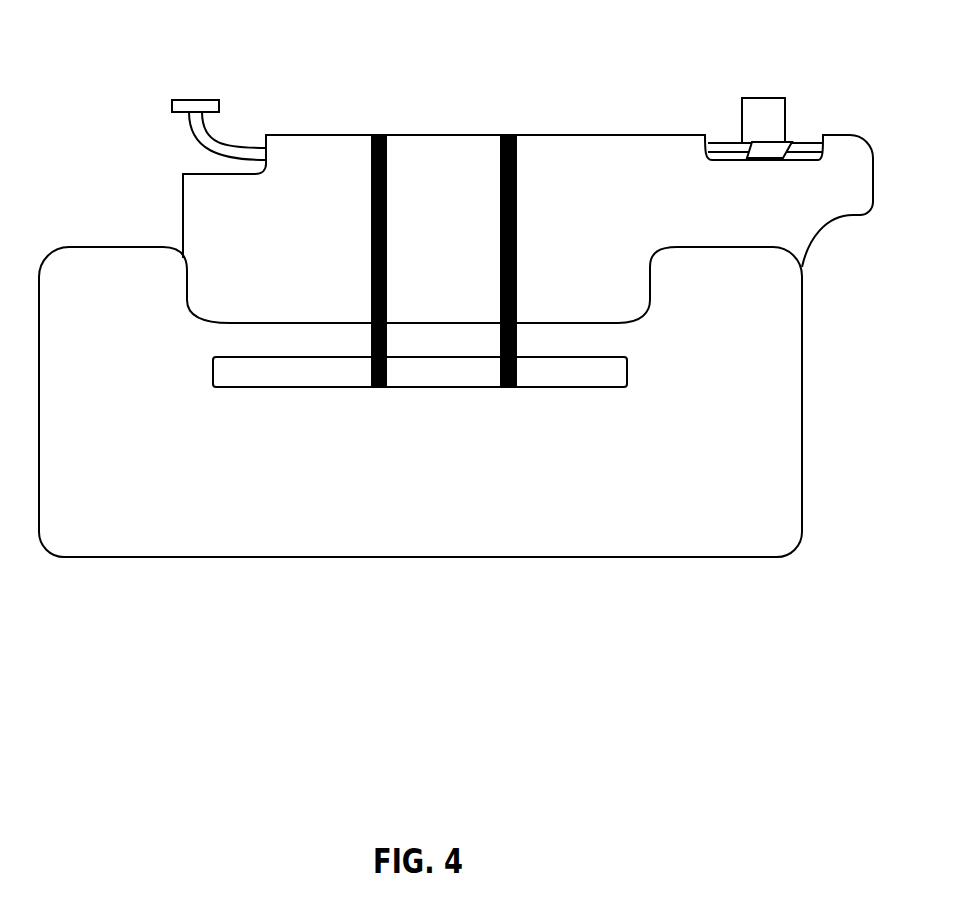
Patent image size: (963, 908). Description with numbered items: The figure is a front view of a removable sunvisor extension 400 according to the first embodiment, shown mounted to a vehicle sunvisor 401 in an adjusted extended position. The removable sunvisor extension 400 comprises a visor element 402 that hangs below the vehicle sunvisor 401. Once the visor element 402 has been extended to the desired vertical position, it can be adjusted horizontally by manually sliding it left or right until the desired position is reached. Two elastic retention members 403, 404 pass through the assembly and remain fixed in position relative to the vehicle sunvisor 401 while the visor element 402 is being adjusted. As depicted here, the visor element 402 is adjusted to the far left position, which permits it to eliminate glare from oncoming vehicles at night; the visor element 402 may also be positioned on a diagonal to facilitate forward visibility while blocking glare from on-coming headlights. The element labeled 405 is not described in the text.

The removable sunvisor extension 400 is at (708, 675).
The vehicle sunvisor 401 is at (319, 148).
The visor element 402 is at (335, 525).
The elastic retention member 403 is at (383, 134).
The elastic retention member 404 is at (510, 135).
The mounting plate 405 is at (236, 370).